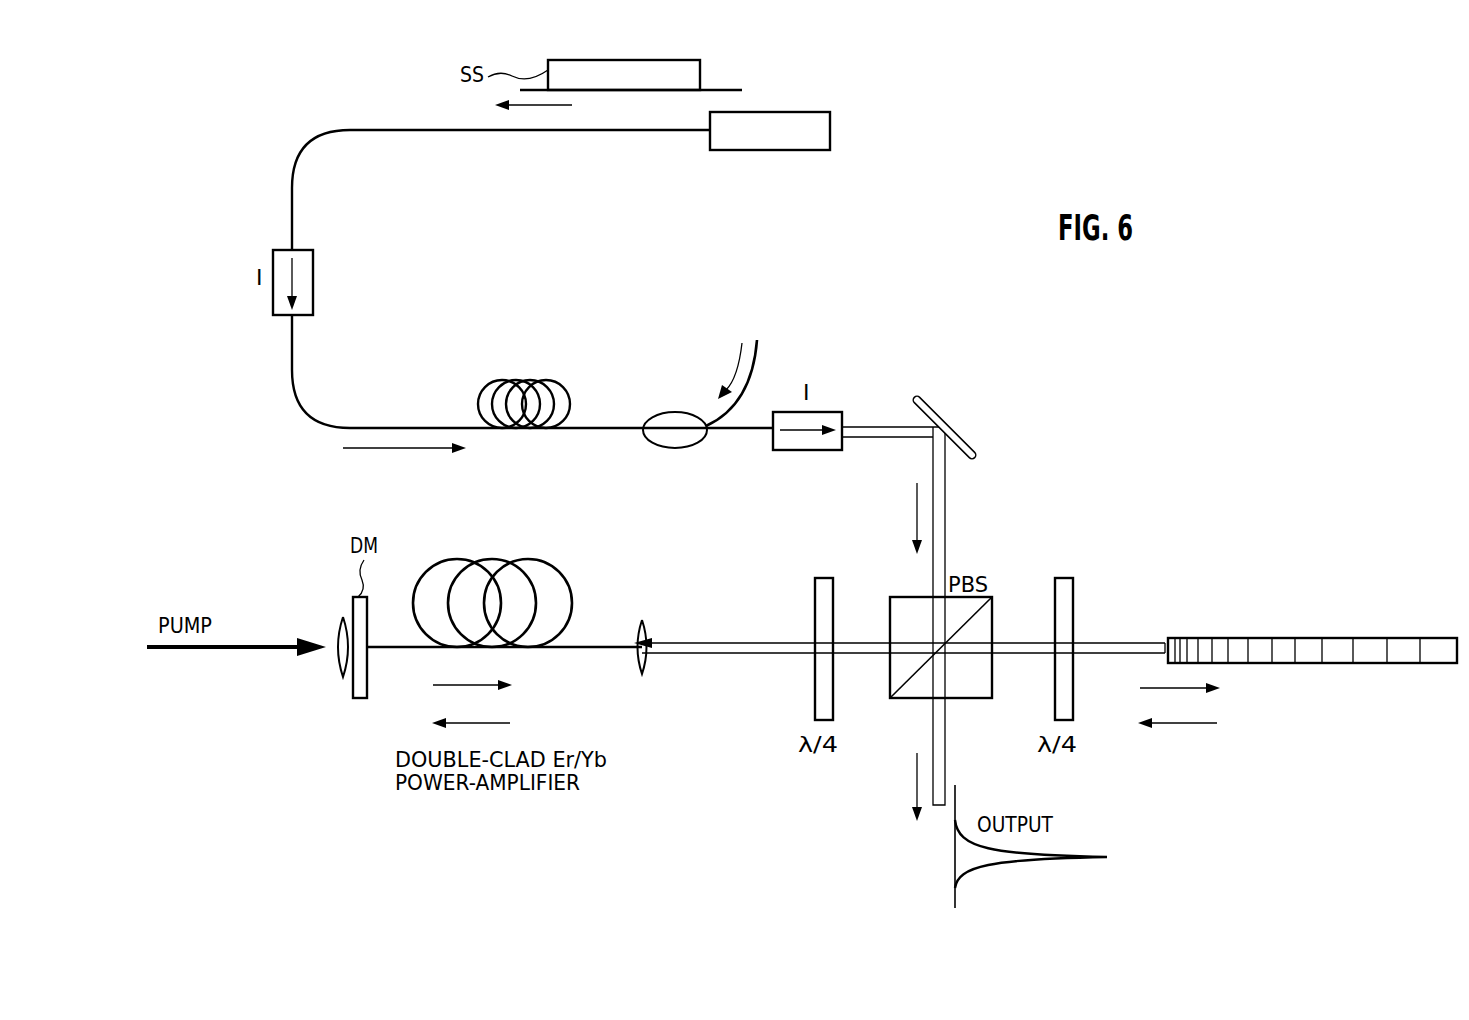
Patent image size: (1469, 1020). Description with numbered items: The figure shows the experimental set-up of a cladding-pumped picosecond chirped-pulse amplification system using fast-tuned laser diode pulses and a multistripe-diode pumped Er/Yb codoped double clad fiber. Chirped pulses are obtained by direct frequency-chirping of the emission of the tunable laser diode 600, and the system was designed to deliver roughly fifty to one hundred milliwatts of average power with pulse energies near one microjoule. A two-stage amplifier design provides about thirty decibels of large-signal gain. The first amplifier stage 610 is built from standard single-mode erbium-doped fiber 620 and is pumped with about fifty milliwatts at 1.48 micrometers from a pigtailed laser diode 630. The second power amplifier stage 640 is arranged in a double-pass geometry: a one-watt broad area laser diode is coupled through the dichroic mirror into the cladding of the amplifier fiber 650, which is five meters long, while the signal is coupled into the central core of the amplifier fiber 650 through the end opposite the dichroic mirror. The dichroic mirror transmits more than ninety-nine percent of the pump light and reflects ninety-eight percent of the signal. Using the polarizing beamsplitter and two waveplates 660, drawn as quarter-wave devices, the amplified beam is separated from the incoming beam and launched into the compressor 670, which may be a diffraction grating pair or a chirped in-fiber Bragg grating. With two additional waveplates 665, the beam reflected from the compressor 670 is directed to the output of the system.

The tunable laser diode 600 is at (830, 127).
The first amplifier stage 610 is at (546, 368).
The single-mode erbium-doped fiber 620 is at (302, 402).
The pigtailed laser diode 630 is at (768, 360).
The second power amplifier stage 640 is at (645, 620).
The amplifier fiber 650 is at (500, 562).
The waveplates 660 is at (824, 578).
The waveplates 665 is at (1064, 578).
The compressor 670 is at (1222, 638).